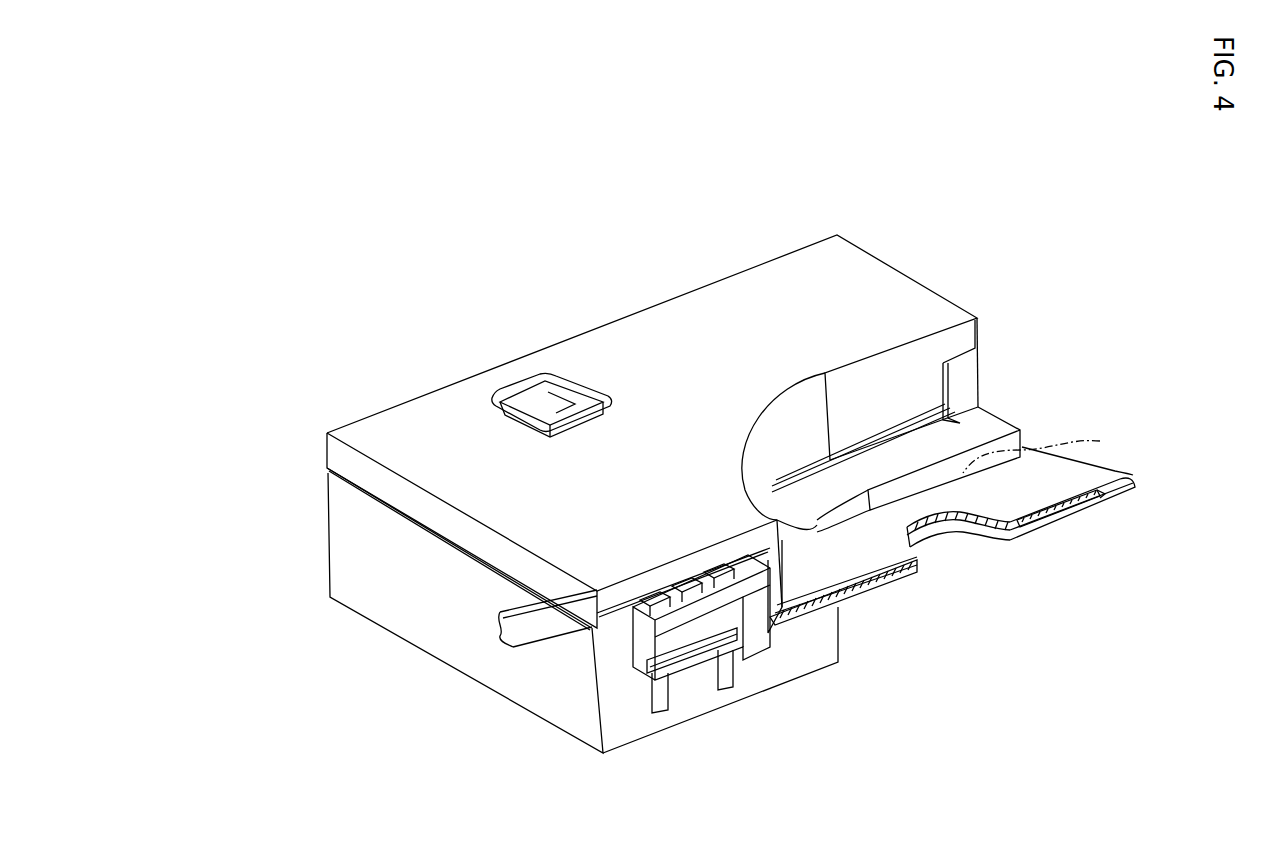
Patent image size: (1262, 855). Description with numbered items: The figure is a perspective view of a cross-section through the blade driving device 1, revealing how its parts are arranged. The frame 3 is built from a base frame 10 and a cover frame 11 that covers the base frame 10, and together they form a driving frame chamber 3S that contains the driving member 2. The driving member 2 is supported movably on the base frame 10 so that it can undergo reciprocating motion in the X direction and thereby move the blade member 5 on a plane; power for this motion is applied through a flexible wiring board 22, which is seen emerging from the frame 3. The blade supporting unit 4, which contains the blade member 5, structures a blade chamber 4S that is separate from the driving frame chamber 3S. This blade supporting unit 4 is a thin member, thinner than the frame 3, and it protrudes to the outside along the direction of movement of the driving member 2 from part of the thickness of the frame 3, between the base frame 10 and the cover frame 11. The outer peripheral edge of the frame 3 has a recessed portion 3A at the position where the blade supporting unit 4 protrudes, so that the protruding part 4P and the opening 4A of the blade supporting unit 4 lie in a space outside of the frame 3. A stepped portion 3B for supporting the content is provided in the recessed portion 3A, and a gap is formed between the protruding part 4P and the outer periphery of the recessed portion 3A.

The blade driving device 1 is at (1005, 240).
The driving member 2 is at (680, 623).
The frame 3 is at (676, 497).
The recessed portion 3A is at (1047, 451).
The stepped portion 3B is at (993, 420).
The driving frame chamber 3S is at (652, 648).
The blade supporting unit 4 is at (883, 591).
The opening 4A is at (973, 527).
The protruding part 4P is at (993, 457).
The blade chamber 4S is at (812, 612).
The blade member 5 is at (1063, 507).
The base frame 10 is at (327, 535).
The cover frame 11 is at (327, 452).
The wiring board 22 is at (537, 637).